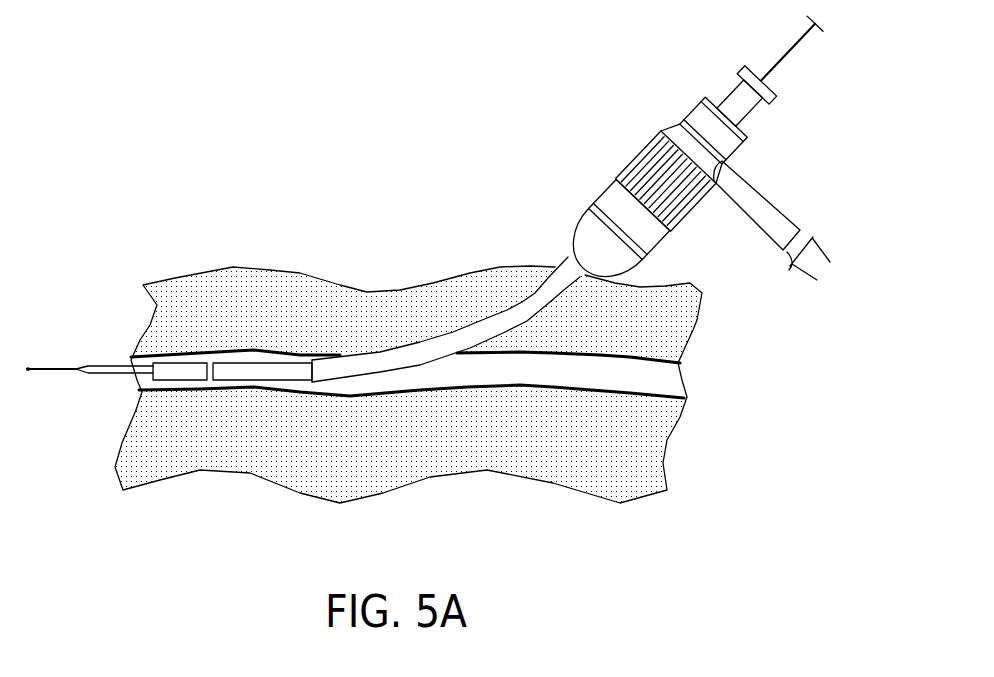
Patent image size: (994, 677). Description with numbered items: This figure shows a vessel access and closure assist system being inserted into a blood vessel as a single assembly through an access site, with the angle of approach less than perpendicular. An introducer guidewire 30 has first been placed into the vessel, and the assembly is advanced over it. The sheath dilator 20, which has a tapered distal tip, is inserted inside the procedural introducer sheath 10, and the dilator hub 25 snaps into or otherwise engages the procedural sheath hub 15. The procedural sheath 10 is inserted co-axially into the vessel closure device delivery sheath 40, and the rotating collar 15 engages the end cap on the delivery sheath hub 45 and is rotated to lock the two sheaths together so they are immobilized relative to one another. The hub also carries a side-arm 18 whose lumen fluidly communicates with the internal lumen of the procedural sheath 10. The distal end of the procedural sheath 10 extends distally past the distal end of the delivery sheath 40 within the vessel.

The procedural introducer sheath 10 is at (252, 362).
The proximal hub 15 is at (637, 150).
The side-arm 18 is at (778, 212).
The sheath dilator 20 is at (108, 376).
The proximal hub 25 is at (760, 112).
The introducer guidewire 30 is at (35, 367).
The vessel closure device delivery sheath 40 is at (500, 322).
The proximal hub 45 is at (605, 192).